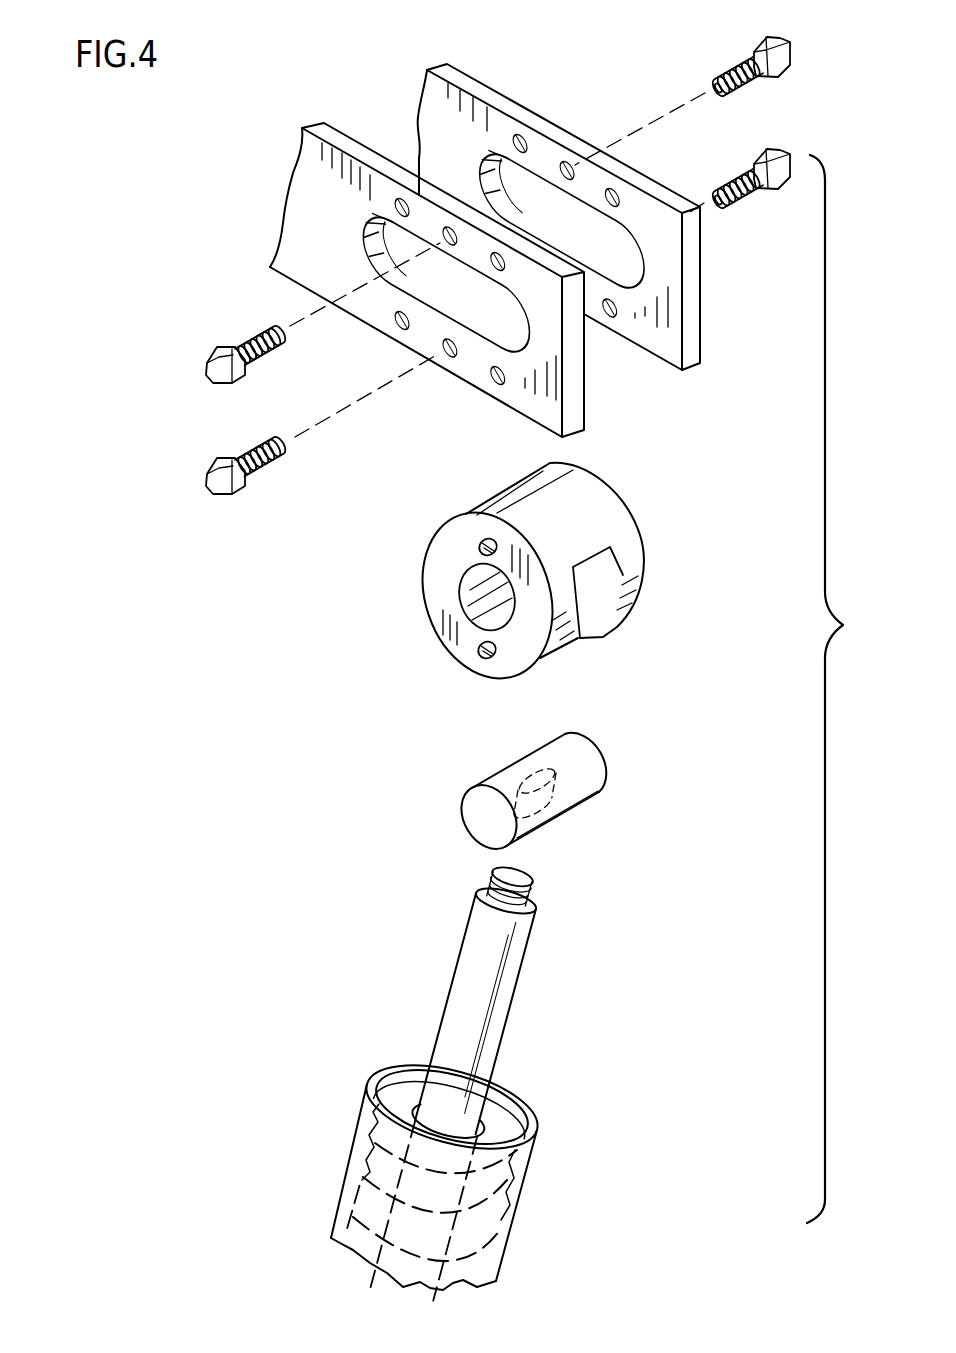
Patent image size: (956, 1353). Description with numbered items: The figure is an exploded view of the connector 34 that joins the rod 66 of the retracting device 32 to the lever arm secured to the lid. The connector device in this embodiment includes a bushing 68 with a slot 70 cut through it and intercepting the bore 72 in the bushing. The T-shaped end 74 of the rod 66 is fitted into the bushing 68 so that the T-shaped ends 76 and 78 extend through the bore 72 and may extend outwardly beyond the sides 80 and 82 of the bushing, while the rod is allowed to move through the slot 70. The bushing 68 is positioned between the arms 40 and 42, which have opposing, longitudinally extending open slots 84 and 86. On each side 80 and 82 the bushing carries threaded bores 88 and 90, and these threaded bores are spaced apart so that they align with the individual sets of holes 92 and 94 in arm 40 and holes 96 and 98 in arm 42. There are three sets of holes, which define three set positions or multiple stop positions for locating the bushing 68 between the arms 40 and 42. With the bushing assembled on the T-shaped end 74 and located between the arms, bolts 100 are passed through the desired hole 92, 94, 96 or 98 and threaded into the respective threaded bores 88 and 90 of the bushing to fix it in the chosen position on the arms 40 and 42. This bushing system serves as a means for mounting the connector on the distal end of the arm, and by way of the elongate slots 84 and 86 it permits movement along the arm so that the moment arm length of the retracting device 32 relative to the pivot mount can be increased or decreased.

The retracting device 32 is at (540, 1195).
The connector 34 is at (601, 66).
The arm 40 is at (409, 291).
The arm 42 is at (554, 237).
The rod 66 is at (512, 959).
The bushing 68 is at (525, 562).
The slot 70 is at (608, 574).
The bore 72 is at (480, 586).
The T-shaped end 74 is at (526, 787).
The T-shaped end 76 is at (471, 810).
The T-shaped end 78 is at (598, 782).
The side 80 is at (433, 550).
The side 82 is at (605, 486).
The open slot 84 is at (446, 284).
The open slot 86 is at (562, 221).
The threaded bore 88 is at (486, 540).
The threaded bore 90 is at (479, 651).
The holes 92 is at (498, 376).
The holes 94 is at (498, 262).
The holes 96 is at (610, 308).
The holes 98 is at (612, 198).
The bolts 100 is at (214, 381).